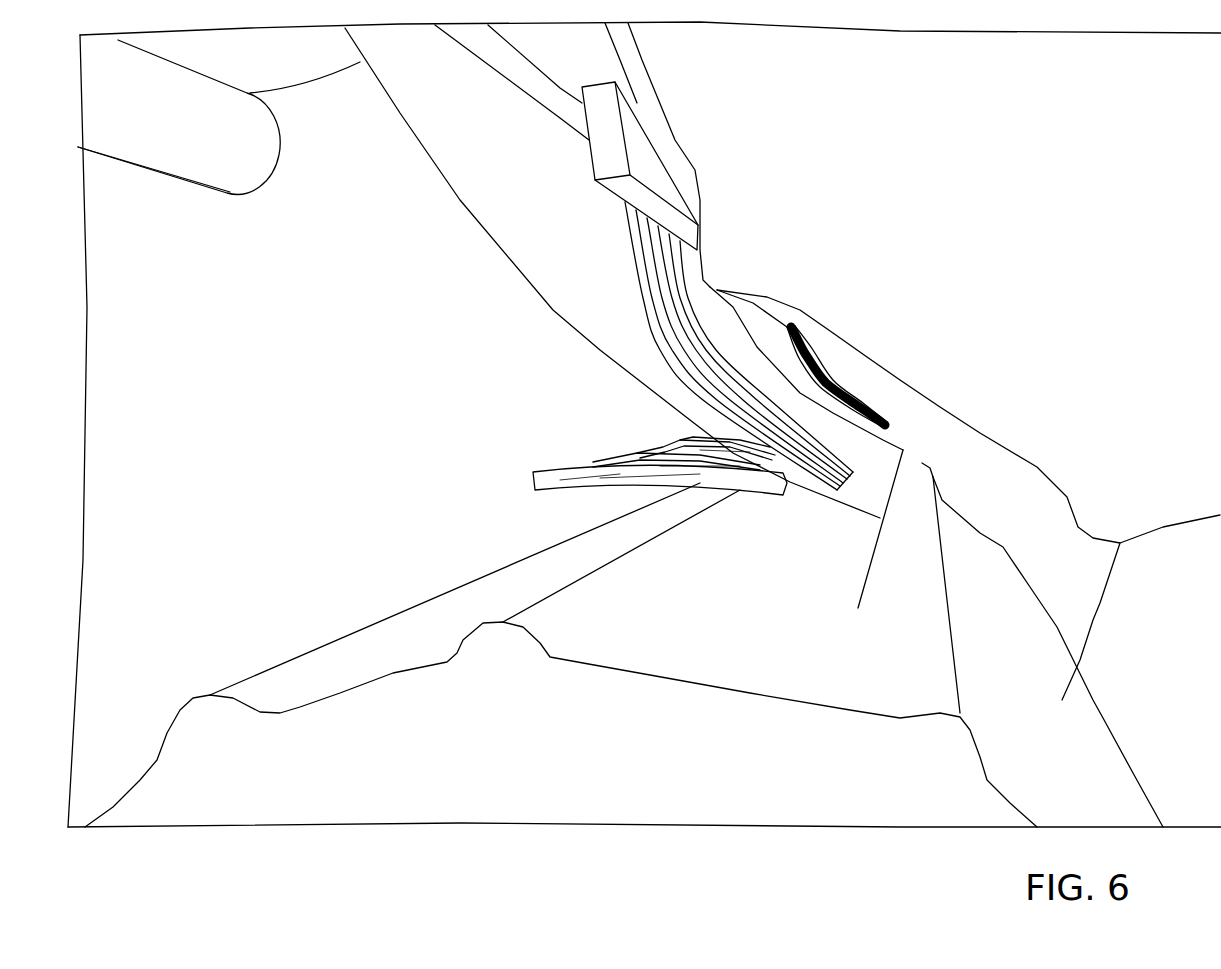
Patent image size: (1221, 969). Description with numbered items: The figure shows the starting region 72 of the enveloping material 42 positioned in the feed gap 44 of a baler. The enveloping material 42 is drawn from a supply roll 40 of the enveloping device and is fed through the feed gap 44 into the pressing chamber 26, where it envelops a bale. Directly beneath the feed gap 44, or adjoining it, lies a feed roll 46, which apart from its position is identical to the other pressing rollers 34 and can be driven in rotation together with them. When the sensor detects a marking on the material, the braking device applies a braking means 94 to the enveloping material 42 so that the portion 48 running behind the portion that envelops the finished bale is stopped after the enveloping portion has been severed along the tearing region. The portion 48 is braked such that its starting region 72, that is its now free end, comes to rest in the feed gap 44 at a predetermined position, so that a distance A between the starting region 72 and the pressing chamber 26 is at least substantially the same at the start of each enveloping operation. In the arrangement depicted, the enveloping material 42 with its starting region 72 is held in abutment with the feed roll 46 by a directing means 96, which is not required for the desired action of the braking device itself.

The supply roll 40 is at (187, 52).
The braking means 94 is at (200, 160).
The enveloping material 42 is at (410, 229).
The portion 48 is at (567, 228).
The feed gap 44 is at (526, 441).
The directing means 96 is at (818, 350).
The pressing rollers 34 is at (1077, 295).
The starting region 72 is at (895, 464).
The pressing chamber 26 is at (1203, 656).
The feed roll 46 is at (572, 779).
The distance A is at (1054, 674).